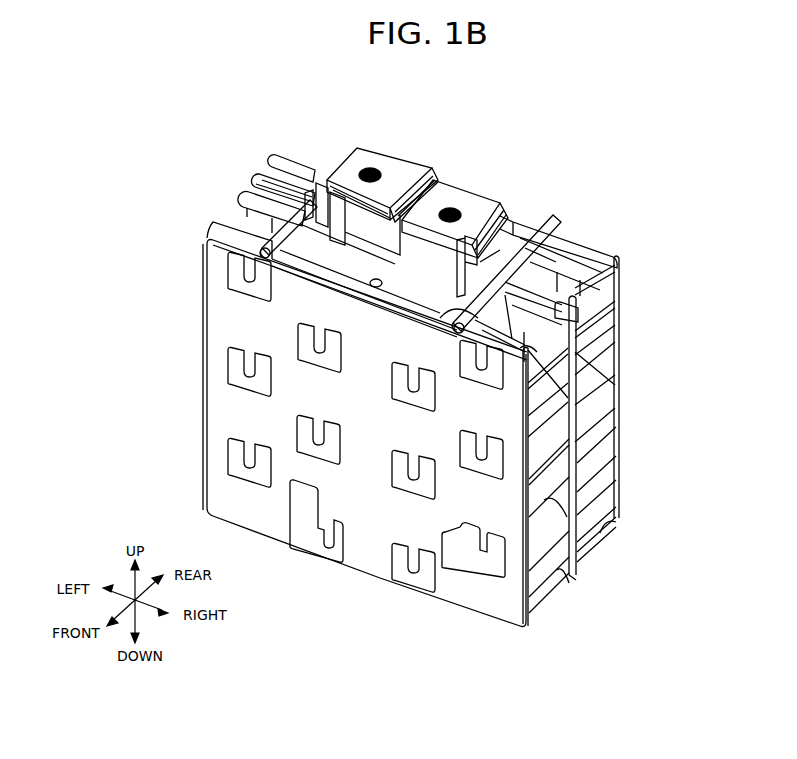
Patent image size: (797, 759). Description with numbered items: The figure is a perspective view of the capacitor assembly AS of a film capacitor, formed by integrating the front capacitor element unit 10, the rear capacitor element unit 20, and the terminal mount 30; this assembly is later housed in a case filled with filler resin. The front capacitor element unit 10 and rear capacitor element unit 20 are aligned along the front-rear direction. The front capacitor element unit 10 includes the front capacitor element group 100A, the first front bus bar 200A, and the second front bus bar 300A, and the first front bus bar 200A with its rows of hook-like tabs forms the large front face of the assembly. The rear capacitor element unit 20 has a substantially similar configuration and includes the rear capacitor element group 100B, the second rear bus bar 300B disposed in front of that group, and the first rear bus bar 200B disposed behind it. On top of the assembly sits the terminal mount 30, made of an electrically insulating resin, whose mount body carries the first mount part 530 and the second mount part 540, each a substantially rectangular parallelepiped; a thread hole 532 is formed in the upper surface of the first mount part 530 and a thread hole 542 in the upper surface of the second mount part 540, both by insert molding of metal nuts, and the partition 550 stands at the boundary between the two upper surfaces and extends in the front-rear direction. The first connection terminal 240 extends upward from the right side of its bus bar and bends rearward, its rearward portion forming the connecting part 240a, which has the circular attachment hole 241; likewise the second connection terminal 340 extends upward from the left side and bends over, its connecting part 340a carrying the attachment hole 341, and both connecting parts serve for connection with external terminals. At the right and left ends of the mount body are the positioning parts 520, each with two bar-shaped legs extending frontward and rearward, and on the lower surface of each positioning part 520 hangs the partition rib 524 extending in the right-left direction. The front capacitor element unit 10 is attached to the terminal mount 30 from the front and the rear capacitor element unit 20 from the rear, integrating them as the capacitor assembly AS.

The front capacitor element unit 10 is at (202, 262).
The capacitor assembly AS is at (233, 187).
The rear capacitor element unit 20 is at (273, 167).
The terminal mount 30 is at (345, 150).
The second mount part 540 is at (290, 143).
The thread hole 542 is at (365, 168).
The second connection terminal 340 is at (420, 150).
The connecting part 340a is at (410, 170).
The partition 550 is at (455, 160).
The first connection terminal 240 is at (490, 197).
The connecting part 240a is at (453, 200).
The first mount part 530 is at (523, 217).
The thread hole 532 is at (408, 234).
The attachment hole 341 is at (365, 250).
The attachment hole 241 is at (440, 283).
The positioning part 520 is at (292, 265).
The partition rib 524 is at (520, 370).
The first front bus bar 200A is at (376, 585).
The first rear bus bar 200B is at (557, 233).
The second front bus bar 300A is at (606, 357).
The second rear bus bar 300B is at (618, 300).
The front capacitor element group 100A is at (548, 605).
The rear capacitor element group 100B is at (592, 555).